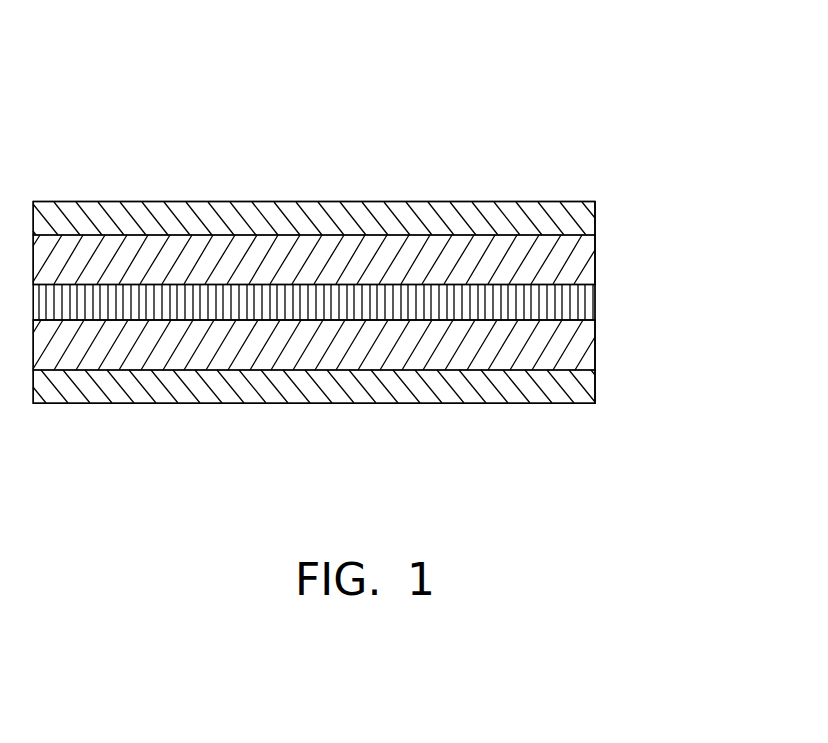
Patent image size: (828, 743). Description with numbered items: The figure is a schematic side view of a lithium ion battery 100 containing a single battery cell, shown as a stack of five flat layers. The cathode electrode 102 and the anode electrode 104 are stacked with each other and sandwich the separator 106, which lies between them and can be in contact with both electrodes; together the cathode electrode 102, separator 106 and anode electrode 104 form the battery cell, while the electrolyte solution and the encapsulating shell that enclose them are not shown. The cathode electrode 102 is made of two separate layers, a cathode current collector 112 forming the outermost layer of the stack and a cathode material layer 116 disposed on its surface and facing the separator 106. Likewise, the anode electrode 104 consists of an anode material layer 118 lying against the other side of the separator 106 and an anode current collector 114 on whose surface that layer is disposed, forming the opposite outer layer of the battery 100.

The lithium ion battery 100 is at (352, 92).
The cathode electrode 102 is at (679, 163).
The anode electrode 104 is at (690, 312).
The separator 106 is at (588, 303).
The cathode current collector 112 is at (572, 212).
The anode current collector 114 is at (580, 397).
The cathode material layer 116 is at (585, 265).
The anode material layer 118 is at (572, 342).